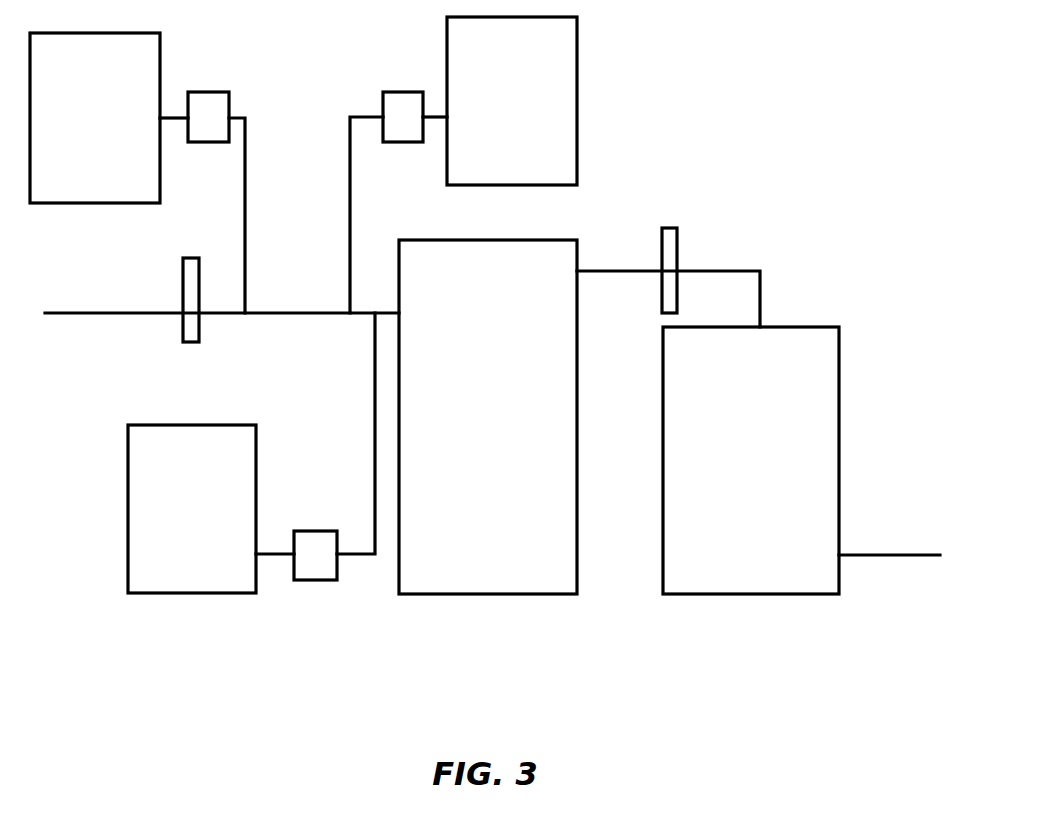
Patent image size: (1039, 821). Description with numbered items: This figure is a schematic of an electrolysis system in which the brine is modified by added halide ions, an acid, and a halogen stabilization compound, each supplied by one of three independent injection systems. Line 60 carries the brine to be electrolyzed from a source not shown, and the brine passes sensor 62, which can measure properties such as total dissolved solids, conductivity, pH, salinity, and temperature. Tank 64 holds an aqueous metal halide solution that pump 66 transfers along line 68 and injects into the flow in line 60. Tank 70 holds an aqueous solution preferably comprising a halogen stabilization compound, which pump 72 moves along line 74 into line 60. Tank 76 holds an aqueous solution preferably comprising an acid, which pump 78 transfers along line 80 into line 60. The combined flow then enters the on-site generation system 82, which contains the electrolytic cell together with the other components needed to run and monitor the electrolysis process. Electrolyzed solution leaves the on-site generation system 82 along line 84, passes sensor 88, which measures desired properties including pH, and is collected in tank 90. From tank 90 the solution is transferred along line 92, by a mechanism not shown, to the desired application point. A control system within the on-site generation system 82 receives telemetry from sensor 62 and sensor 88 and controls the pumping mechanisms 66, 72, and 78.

The line 60 is at (127, 310).
The sensor 62 is at (183, 278).
The tank 64 is at (160, 49).
The pump 66 is at (229, 92).
The line 68 is at (248, 138).
The tank 70 is at (575, 78).
The pump 72 is at (402, 93).
The line 74 is at (363, 115).
The tank 76 is at (127, 473).
The pump 78 is at (323, 582).
The line 80 is at (372, 417).
The on-site generation system 82 is at (425, 240).
The line 84 is at (617, 268).
The sensor 88 is at (665, 227).
The tank 90 is at (808, 325).
The line 92 is at (878, 552).